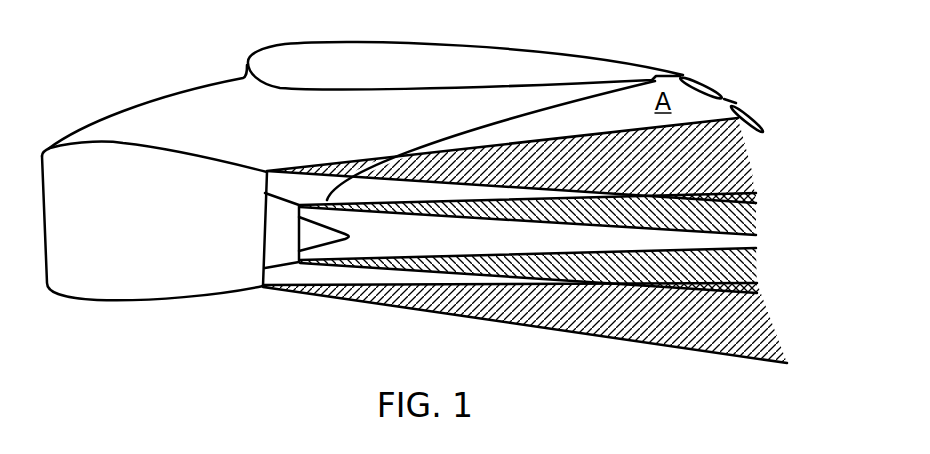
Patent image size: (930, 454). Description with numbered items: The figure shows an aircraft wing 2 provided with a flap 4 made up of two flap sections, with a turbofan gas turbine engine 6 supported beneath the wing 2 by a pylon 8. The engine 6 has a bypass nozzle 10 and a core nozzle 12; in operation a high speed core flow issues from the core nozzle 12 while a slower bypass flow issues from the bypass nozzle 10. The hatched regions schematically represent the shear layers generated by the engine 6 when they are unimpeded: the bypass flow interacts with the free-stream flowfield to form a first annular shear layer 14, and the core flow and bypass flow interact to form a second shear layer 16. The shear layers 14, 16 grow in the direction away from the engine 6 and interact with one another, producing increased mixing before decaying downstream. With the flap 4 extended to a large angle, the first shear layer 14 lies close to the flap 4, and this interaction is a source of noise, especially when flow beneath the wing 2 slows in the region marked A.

The aircraft wing 2 is at (337, 42).
The flap 4 is at (712, 86).
The turbofan gas turbine engine 6 is at (138, 302).
The pylon 8 is at (140, 101).
The bypass nozzle 10 is at (263, 274).
The core nozzle 12 is at (313, 267).
The first annular shear layer 14 is at (707, 355).
The second shear layer 16 is at (737, 270).